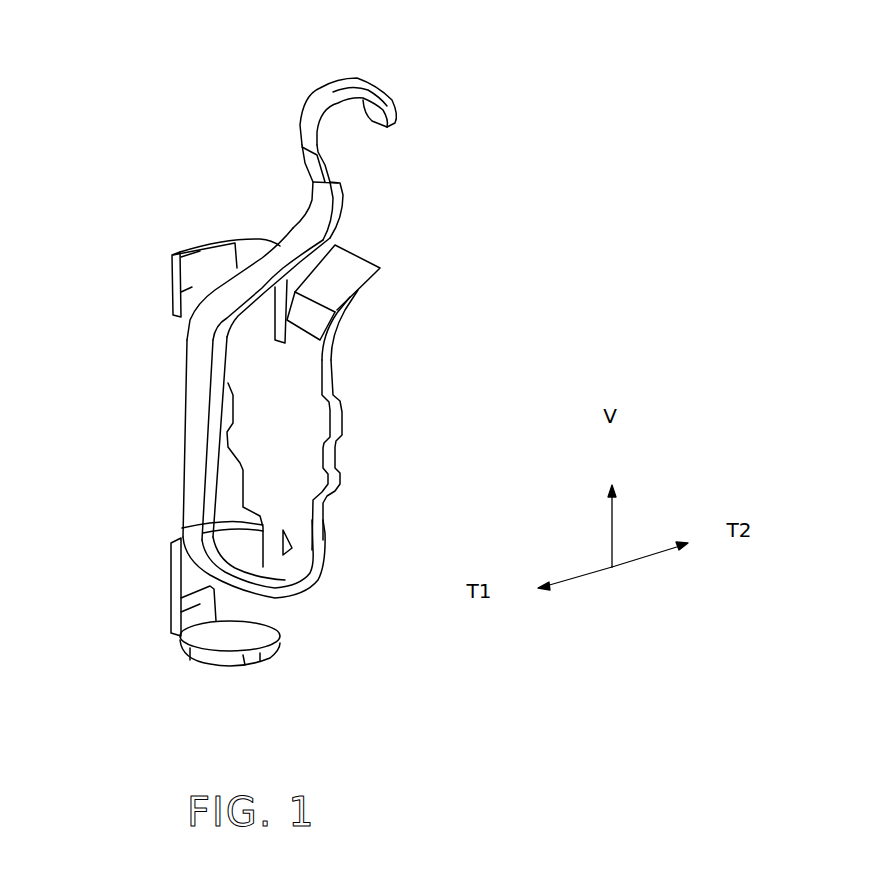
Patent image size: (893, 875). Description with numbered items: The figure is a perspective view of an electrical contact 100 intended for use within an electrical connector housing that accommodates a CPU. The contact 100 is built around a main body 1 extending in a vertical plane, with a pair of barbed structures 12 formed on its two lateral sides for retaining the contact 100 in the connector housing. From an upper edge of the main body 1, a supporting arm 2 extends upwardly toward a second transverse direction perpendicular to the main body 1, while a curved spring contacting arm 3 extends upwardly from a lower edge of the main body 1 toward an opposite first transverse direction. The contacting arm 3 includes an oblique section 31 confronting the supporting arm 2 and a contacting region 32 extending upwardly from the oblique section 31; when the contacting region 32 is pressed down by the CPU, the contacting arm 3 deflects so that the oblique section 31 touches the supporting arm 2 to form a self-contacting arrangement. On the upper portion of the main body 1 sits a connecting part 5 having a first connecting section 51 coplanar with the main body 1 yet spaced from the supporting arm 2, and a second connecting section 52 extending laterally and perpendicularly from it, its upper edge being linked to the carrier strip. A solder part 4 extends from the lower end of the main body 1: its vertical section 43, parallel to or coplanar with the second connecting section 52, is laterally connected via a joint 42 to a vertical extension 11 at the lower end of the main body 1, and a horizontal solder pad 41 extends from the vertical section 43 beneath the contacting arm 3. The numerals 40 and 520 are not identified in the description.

The electrical contact 100 is at (267, 107).
The main body 1 is at (277, 393).
The vertical extension 11 is at (272, 557).
The barbed structures 12 is at (338, 480).
The supporting arm 2 is at (333, 280).
The contacting arm 3 is at (200, 398).
The oblique section 31 is at (318, 212).
The contacting region 32 is at (332, 97).
The solder part 4 is at (200, 617).
The mounting plate 40 is at (182, 562).
The horizontal solder pad 41 is at (238, 635).
The joint 42 is at (250, 543).
The vertical section 43 is at (200, 583).
The connecting part 5 is at (195, 267).
The first connecting section 51 is at (330, 237).
The second connecting section 52 is at (190, 288).
The hole 520 is at (195, 252).